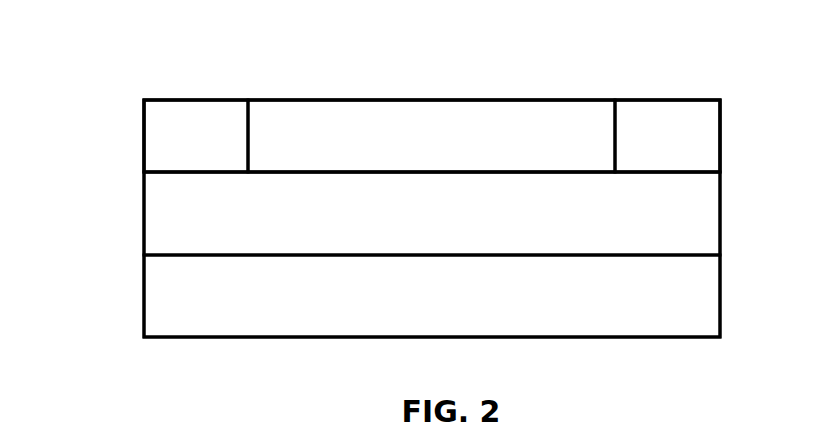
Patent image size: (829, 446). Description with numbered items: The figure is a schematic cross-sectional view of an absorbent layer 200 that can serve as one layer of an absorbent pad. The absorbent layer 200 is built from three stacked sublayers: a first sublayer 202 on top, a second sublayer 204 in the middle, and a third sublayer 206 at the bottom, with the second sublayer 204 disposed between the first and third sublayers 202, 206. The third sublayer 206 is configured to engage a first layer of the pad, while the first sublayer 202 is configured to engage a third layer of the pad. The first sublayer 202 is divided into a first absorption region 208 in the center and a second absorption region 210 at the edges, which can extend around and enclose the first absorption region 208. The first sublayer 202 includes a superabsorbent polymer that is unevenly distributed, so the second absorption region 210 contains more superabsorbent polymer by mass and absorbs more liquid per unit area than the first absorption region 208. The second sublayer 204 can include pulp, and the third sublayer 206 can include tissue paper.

The absorbent layer 200 is at (93, 60).
The first sublayer 202 is at (124, 131).
The second sublayer 204 is at (129, 219).
The third sublayer 206 is at (129, 303).
The first absorption region 208 is at (431, 136).
The second absorption region 210 is at (432, 136).